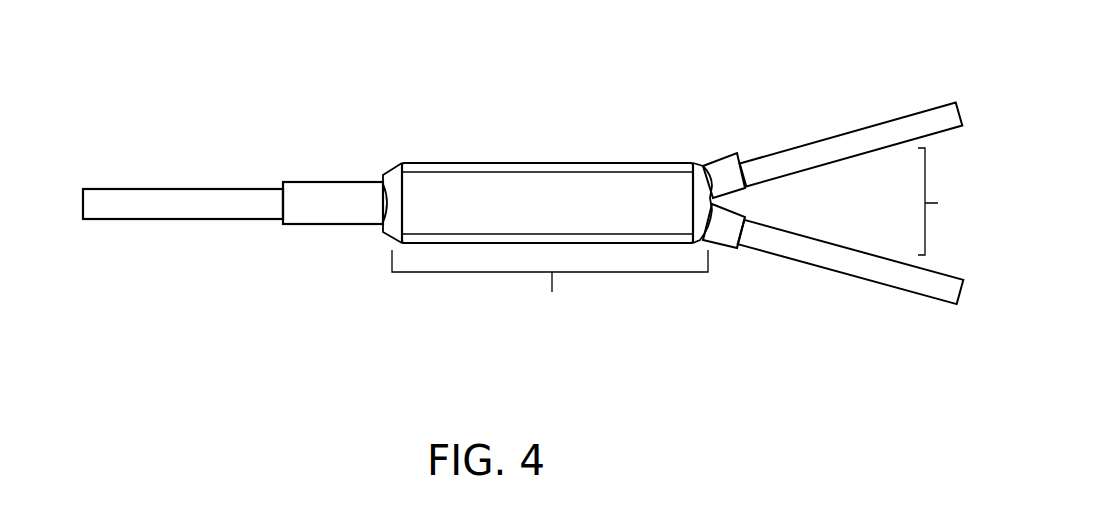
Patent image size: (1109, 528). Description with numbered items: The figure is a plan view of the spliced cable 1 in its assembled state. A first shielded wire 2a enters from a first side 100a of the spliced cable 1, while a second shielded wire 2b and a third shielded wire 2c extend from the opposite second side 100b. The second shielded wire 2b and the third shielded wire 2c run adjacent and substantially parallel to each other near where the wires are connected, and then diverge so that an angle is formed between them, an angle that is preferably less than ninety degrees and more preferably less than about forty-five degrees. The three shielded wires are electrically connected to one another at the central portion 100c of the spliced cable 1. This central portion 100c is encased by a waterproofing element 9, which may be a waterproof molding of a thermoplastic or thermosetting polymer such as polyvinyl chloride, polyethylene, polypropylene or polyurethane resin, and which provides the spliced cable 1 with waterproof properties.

The spliced cable 1 is at (127, 320).
The first shielded wire 2a is at (202, 137).
The second shielded wire 2b is at (802, 88).
The third shielded wire 2c is at (822, 295).
The waterproofing element 9 is at (500, 152).
The first side 100a is at (273, 278).
The second side 100b is at (753, 310).
The central portion 100c is at (550, 287).